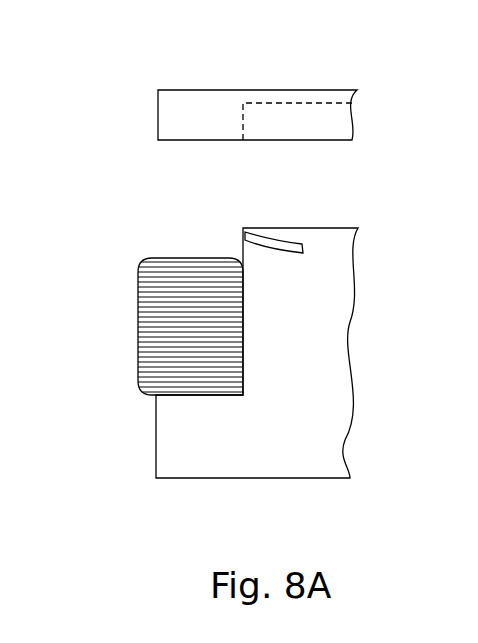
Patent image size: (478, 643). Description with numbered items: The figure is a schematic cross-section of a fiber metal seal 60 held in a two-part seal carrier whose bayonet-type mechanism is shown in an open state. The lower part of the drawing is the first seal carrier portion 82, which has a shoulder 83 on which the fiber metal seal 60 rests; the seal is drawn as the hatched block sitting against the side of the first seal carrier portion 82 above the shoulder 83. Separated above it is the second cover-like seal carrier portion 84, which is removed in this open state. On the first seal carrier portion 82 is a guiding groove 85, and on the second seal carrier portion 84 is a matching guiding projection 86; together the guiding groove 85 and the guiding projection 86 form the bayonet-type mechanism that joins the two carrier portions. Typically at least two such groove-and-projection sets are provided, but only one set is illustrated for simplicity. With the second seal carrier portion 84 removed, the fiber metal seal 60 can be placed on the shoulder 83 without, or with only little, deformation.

The fiber metal seal 60 is at (162, 302).
The first seal carrier portion 82 is at (327, 348).
The shoulder 83 is at (240, 403).
The second cover-like seal carrier portion 84 is at (208, 123).
The guiding groove 85 is at (285, 240).
The guiding projection 86 is at (254, 115).